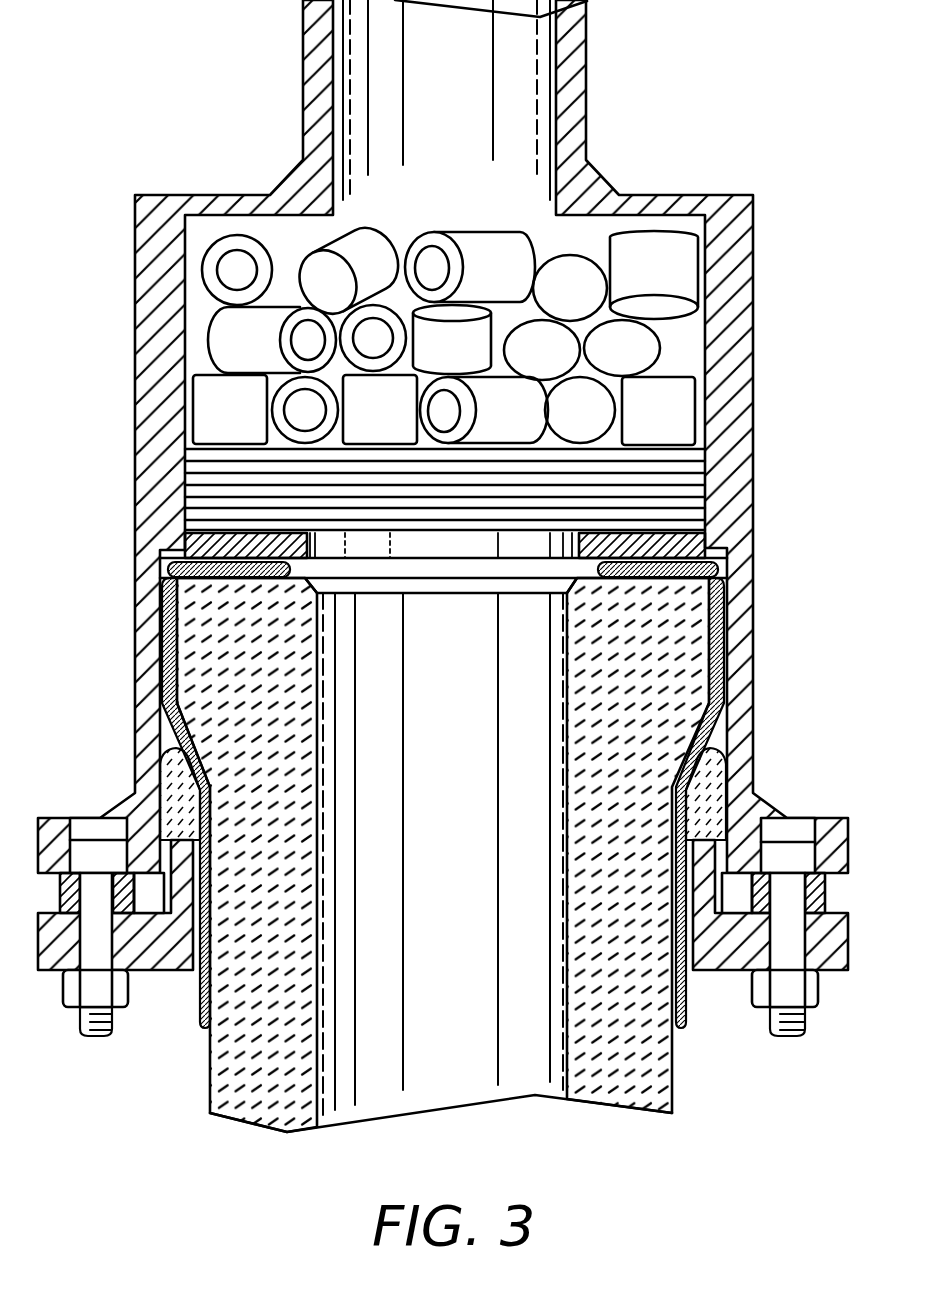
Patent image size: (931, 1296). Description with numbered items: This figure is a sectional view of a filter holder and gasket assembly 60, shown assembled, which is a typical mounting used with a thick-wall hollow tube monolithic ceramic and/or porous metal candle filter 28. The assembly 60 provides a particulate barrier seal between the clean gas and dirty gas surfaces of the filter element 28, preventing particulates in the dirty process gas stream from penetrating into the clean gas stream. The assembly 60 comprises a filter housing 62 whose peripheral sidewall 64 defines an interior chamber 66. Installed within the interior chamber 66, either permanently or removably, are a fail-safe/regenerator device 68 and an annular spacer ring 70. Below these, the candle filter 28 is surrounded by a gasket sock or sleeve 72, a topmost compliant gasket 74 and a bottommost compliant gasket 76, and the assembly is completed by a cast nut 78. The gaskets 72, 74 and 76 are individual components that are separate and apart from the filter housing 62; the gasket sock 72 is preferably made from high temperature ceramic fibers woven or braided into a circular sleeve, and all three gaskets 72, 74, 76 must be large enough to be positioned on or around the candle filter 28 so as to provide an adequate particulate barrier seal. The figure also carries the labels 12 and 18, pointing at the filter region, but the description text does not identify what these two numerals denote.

The filter holder and gasket assembly 60 is at (216, 131).
The filter housing 62 is at (755, 392).
The peripheral sidewall 64 is at (147, 405).
The interior chamber 66 is at (200, 310).
The fail-safe/regenerator device 68 is at (654, 262).
The annular spacer ring 70 is at (660, 547).
The gasket sock or sleeve 72 is at (720, 643).
The topmost compliant gasket 74 is at (725, 573).
The bottommost compliant gasket 76 is at (722, 746).
The cast nut 78 is at (703, 840).
The pipe end 18 is at (213, 594).
The pipe 12 is at (208, 695).
The candle filter 28 is at (672, 1085).